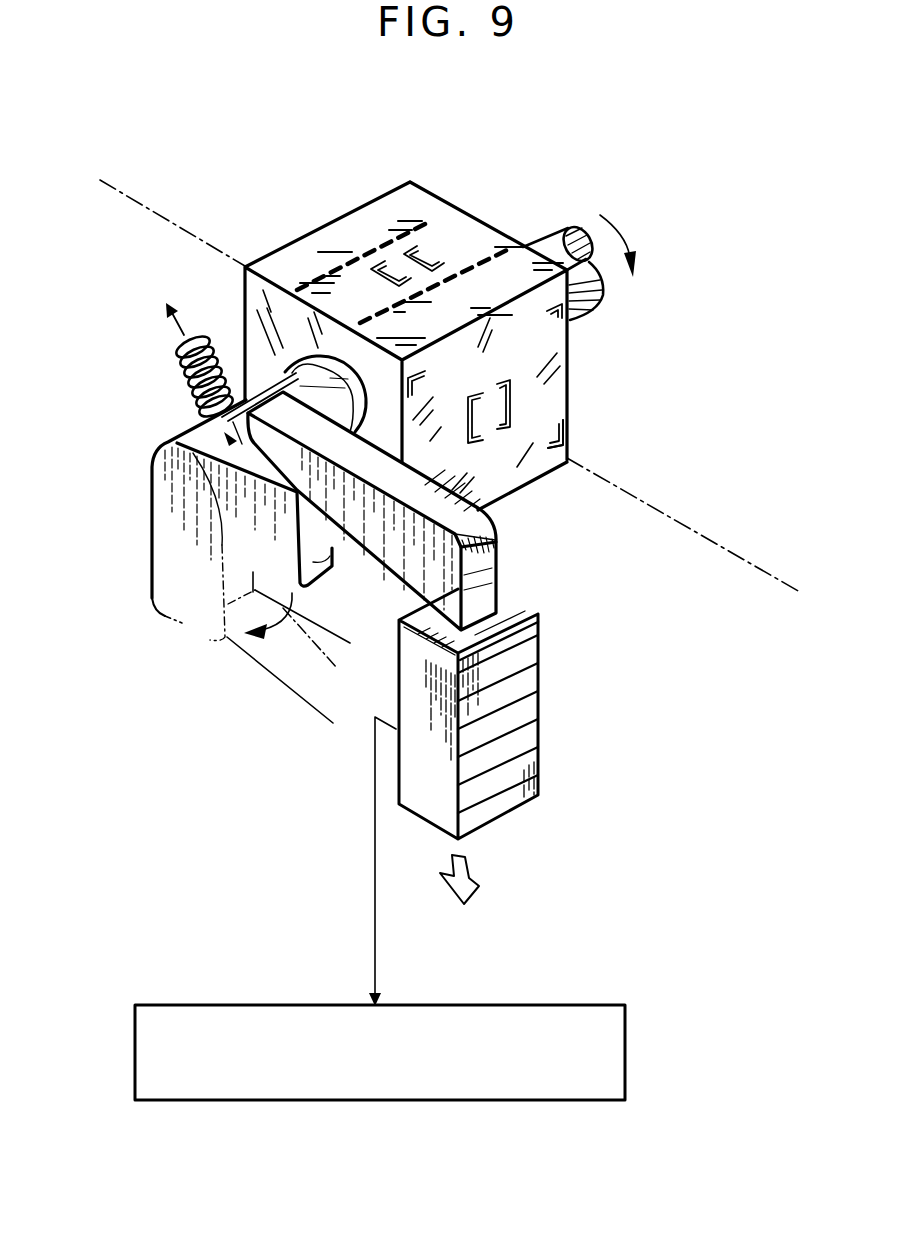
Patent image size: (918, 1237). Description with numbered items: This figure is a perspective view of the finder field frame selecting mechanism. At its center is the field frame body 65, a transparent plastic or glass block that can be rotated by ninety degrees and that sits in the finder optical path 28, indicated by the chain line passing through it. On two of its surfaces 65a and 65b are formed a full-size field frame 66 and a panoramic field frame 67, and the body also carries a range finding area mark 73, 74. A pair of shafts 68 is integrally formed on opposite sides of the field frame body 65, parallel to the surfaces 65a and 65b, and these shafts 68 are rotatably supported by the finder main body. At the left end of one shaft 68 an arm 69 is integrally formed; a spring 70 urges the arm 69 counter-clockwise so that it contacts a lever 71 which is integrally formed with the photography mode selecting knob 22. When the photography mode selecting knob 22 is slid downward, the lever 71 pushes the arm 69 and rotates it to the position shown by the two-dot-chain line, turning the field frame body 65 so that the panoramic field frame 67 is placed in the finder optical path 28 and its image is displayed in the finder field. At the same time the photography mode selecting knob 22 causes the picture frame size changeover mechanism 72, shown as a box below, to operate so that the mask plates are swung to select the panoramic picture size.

The photography mode selecting knob 22 is at (522, 730).
The finder optical path 28 is at (708, 545).
The field frame body 65 is at (473, 314).
The surface of field frame body 65a is at (563, 372).
The surface of field frame body 65b is at (343, 228).
The full-size field frame 66 is at (550, 447).
The panoramic field frame 67 is at (318, 276).
The shaft 68 is at (571, 225).
The arm 69 is at (162, 570).
The spring 70 is at (190, 378).
The lever 71 is at (490, 580).
The picture frame size changeover mechanism 72 is at (268, 1005).
The range finding area mark 73 is at (480, 438).
The range finding area mark 74 is at (431, 208).